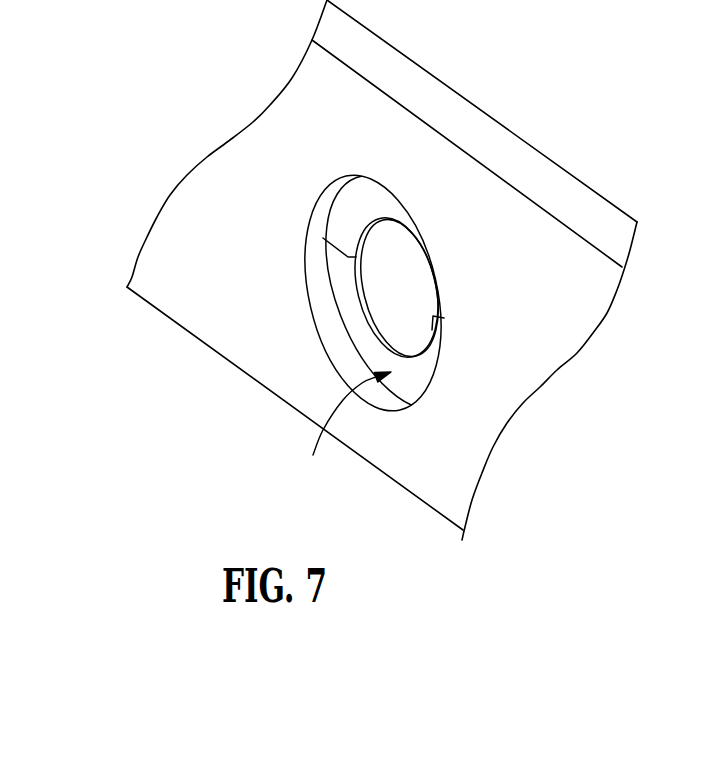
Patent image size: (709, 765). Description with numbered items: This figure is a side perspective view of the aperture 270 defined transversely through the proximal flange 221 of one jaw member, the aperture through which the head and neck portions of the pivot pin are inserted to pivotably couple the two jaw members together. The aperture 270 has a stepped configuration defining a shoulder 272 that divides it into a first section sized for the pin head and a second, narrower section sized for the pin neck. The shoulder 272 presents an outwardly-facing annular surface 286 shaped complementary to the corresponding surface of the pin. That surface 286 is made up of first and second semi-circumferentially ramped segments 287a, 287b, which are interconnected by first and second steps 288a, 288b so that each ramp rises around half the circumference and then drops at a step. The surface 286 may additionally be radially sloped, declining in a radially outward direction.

The proximal flange 221 is at (560, 282).
The aperture 270 is at (380, 275).
The shoulder 272 is at (373, 190).
The outwardly-facing annular surface 286 is at (342, 430).
The first semi-circumferentially ramped segment 287a is at (428, 262).
The second semi-circumferentially ramped segment 287b is at (360, 325).
The first step 288a is at (443, 317).
The second step 288b is at (326, 248).